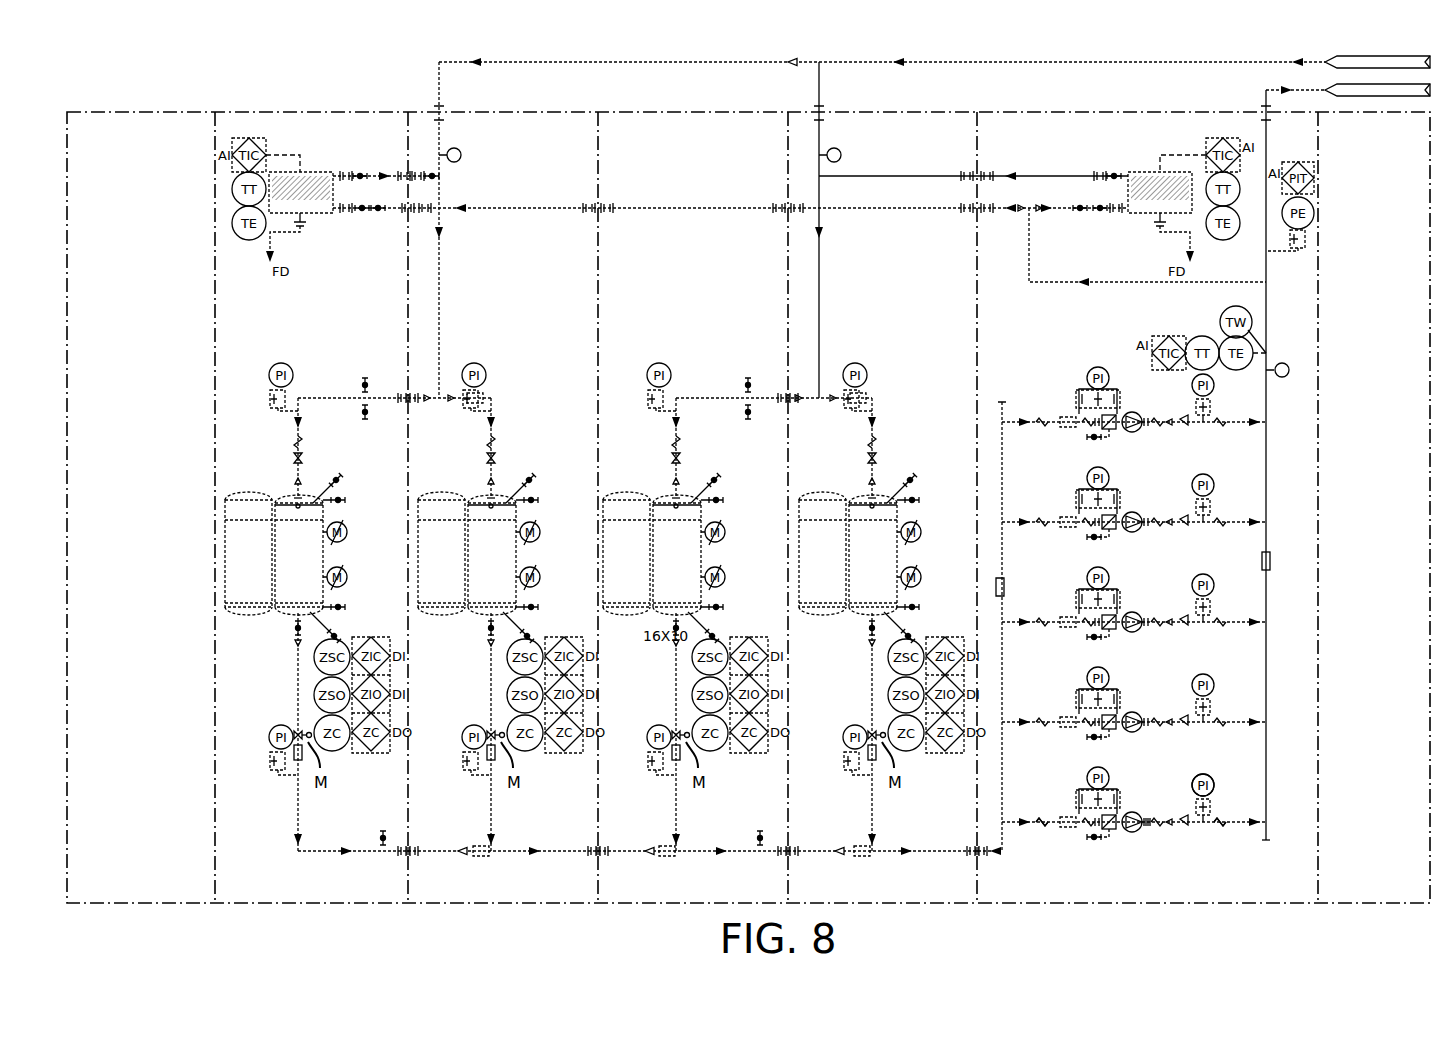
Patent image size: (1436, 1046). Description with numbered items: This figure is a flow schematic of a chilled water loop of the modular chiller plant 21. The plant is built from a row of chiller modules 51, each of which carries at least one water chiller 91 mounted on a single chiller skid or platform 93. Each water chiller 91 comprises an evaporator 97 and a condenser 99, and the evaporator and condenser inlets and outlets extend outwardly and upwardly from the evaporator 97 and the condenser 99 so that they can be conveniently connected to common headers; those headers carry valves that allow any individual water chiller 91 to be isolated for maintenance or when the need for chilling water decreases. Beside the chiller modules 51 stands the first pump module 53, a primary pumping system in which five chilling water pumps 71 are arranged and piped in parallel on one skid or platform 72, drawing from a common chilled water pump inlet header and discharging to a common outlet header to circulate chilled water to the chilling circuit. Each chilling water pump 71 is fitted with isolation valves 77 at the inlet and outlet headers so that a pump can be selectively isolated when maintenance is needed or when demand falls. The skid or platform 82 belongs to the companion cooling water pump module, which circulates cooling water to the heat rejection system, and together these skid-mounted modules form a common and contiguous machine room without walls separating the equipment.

The modular chiller plant 21 is at (203, 88).
The chiller module 51 is at (355, 878).
The first pump module 53 is at (1140, 878).
The chilling water pump 71 is at (1133, 833).
The skid or platform 72 is at (1260, 878).
The isolation valve 77 is at (1035, 825).
The skid or platform 82 is at (1198, 878).
The water chiller 91 is at (197, 638).
The chiller skid or platform 93 is at (488, 613).
The evaporator 97 is at (285, 615).
The condenser 99 is at (225, 575).